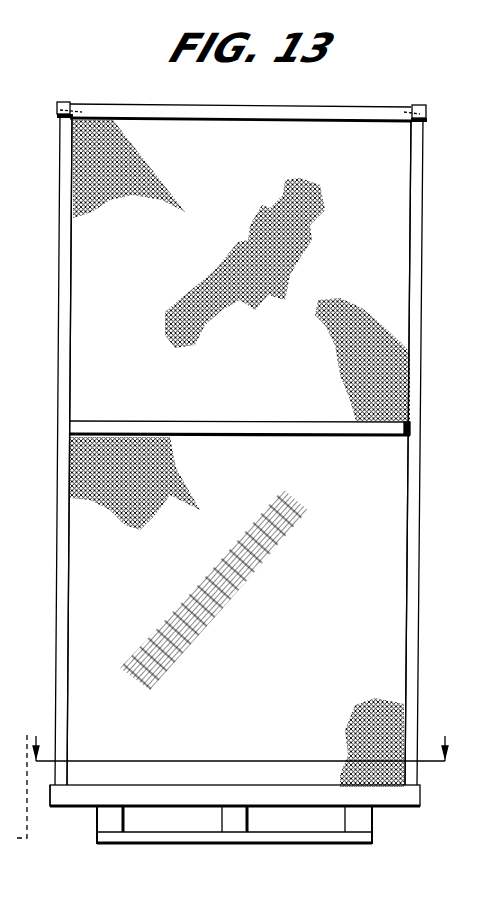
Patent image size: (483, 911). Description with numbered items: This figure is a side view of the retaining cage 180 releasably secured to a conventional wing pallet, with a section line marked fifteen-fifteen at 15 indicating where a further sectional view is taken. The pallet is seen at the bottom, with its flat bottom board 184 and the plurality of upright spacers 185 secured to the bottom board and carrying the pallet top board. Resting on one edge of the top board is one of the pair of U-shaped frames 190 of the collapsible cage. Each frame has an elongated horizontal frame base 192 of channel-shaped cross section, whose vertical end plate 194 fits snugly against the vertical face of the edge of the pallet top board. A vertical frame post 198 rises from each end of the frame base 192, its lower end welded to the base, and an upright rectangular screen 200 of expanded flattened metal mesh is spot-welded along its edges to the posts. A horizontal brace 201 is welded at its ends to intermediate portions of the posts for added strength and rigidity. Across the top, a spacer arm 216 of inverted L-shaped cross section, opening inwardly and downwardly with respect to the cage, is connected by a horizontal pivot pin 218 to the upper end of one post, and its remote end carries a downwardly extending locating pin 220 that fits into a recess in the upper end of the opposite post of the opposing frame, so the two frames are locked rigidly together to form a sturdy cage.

The retaining cage 180 is at (440, 186).
The flat bottom board 184 is at (188, 834).
The upright spacers 185 is at (365, 822).
The U-shaped frames 190 is at (35, 367).
The frame base 192 is at (50, 808).
The vertical end plate 194 is at (213, 796).
The vertical frame post 198 is at (58, 455).
The screen 200 is at (392, 348).
The horizontal brace 201 is at (280, 433).
The spacer arm 216 is at (234, 120).
The horizontal pivot pin 218 is at (56, 103).
The locating pin 220 is at (87, 108).
The section line 15- 15 is at (239, 738).